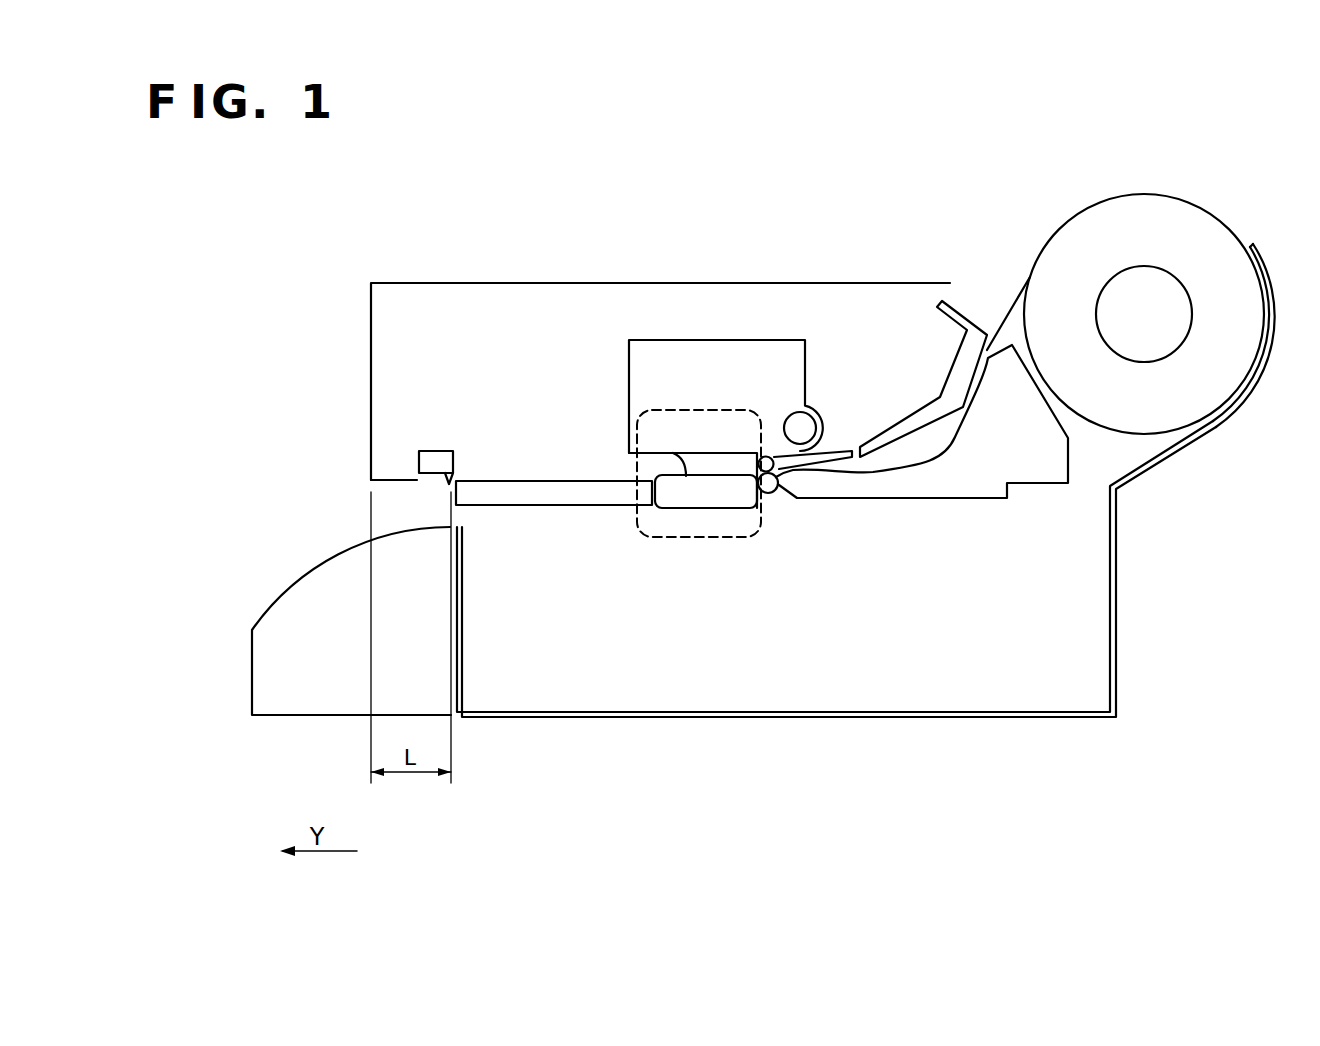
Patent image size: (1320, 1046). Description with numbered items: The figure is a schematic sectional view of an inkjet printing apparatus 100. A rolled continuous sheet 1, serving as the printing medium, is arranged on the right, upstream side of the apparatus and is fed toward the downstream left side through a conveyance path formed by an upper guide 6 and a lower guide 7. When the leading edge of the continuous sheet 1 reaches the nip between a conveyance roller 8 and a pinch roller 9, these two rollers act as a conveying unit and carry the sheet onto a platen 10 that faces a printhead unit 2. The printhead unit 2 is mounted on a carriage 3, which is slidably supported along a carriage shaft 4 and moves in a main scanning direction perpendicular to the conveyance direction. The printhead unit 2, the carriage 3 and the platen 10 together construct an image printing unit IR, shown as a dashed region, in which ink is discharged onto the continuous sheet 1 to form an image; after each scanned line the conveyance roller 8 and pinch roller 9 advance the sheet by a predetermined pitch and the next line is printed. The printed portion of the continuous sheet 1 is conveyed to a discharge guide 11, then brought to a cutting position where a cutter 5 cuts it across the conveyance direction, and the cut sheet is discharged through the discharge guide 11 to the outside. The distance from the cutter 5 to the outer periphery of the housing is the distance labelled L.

The inkjet printing apparatus 100 is at (445, 252).
The continuous sheet 1 is at (1152, 208).
The printhead unit 2 is at (717, 465).
The carriage 3 is at (710, 358).
The carriage shaft 4 is at (799, 427).
The cutter 5 is at (428, 462).
The upper guide 6 is at (973, 345).
The lower guide 7 is at (1017, 445).
The conveyance roller 8 is at (776, 494).
The pinch roller 9 is at (767, 452).
The platen 10 is at (712, 500).
The discharge guide 11 is at (388, 600).
The image printing unit IR is at (635, 473).